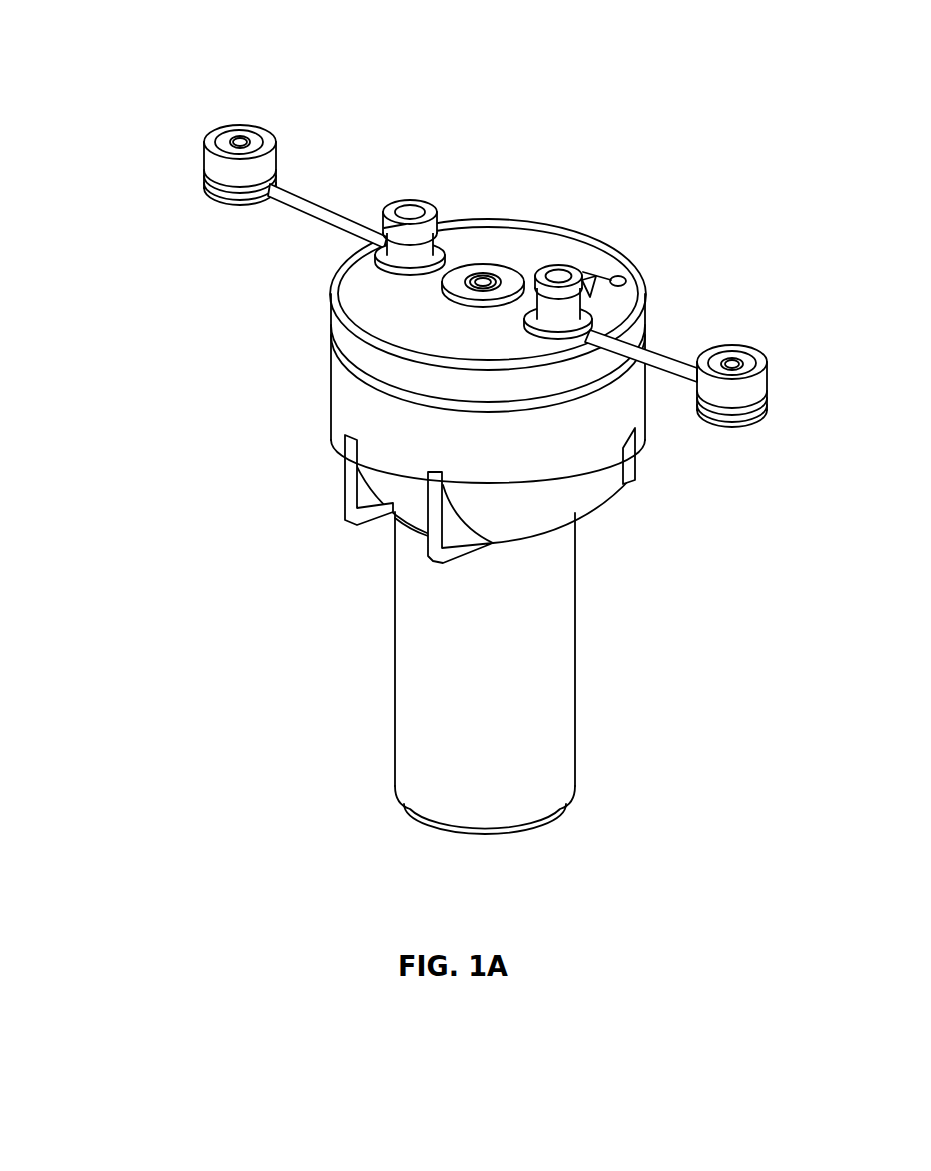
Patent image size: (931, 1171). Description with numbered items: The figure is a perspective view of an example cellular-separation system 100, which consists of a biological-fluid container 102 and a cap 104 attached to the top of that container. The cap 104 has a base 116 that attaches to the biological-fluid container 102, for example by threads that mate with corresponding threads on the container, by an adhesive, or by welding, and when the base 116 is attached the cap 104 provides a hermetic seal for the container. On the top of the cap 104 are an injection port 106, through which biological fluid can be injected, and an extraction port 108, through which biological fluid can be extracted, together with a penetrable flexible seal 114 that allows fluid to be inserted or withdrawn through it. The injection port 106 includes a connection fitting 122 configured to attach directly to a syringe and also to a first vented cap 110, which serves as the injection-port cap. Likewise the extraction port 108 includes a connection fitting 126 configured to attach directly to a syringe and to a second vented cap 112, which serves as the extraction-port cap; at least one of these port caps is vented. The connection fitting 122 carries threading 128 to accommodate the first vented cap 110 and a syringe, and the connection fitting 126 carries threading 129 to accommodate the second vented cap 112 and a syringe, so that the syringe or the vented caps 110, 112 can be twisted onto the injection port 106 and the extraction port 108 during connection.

The cellular-separation system 100 is at (170, 66).
The biological-fluid container 102 is at (565, 590).
The cap 104 is at (316, 284).
The injection port 106 is at (388, 186).
The extraction port 108 is at (590, 249).
The first vented cap 110 is at (240, 126).
The second vented cap 112 is at (768, 357).
The penetrable flexible seal 114 is at (485, 281).
The base 116 is at (331, 323).
The connection fitting 122 is at (380, 238).
The connection fitting 126 is at (573, 299).
The threading 128 is at (418, 201).
The threading 129 is at (567, 260).